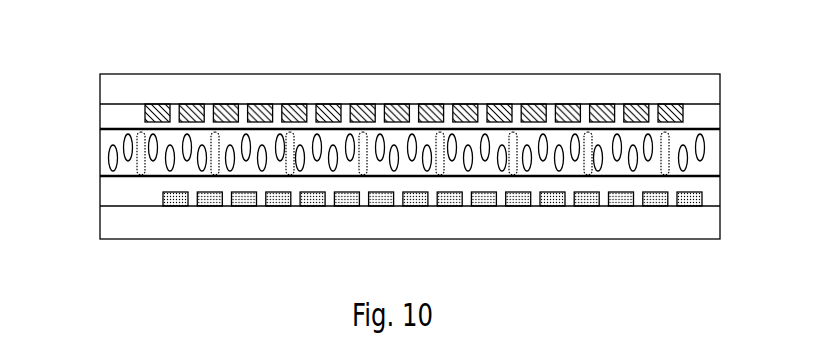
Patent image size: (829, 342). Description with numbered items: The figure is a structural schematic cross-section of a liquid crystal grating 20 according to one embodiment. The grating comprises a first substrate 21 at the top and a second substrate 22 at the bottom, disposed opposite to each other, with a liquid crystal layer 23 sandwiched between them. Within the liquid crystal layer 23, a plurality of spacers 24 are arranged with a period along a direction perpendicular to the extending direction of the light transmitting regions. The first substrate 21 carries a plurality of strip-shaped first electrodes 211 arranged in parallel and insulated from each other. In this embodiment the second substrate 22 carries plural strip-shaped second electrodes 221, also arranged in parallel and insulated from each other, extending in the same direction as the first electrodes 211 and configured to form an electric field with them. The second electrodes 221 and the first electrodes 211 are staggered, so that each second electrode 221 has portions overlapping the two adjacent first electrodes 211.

The liquid crystal grating 20 is at (58, 43).
The first substrate 21 is at (723, 74).
The first electrodes 211 is at (150, 119).
The second substrate 22 is at (723, 176).
The second electrodes 221 is at (163, 201).
The liquid crystal layer 23 is at (107, 166).
The spacers 24 is at (136, 131).